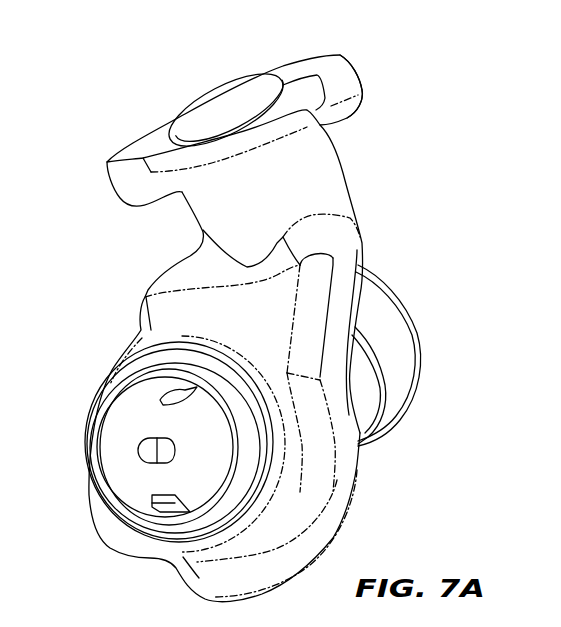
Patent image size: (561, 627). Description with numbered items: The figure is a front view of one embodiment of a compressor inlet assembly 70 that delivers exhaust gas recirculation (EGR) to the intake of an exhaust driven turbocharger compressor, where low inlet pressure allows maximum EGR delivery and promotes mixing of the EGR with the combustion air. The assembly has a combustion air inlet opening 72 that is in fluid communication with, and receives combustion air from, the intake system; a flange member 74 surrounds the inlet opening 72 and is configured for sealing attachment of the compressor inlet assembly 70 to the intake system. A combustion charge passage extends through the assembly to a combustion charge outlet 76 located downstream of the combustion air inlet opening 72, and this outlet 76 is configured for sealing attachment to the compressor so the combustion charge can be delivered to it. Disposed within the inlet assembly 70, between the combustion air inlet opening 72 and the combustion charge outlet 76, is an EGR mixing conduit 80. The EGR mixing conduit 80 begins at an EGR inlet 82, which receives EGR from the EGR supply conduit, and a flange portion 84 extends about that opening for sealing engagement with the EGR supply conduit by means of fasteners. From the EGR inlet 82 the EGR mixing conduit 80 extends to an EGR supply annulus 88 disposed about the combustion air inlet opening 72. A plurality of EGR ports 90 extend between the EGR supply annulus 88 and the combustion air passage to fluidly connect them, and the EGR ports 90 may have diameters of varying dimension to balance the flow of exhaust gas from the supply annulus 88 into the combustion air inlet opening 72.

The compressor inlet assembly 70 is at (138, 294).
The combustion air inlet opening 72 is at (405, 298).
The flange member 74 is at (372, 288).
The combustion charge outlet 76 is at (118, 450).
The EGR mixing conduit 80 is at (208, 457).
The EGR inlet 82 is at (209, 92).
The flange portion 84 is at (360, 72).
The EGR supply annulus 88 is at (327, 443).
The EGR ports 90 is at (167, 507).